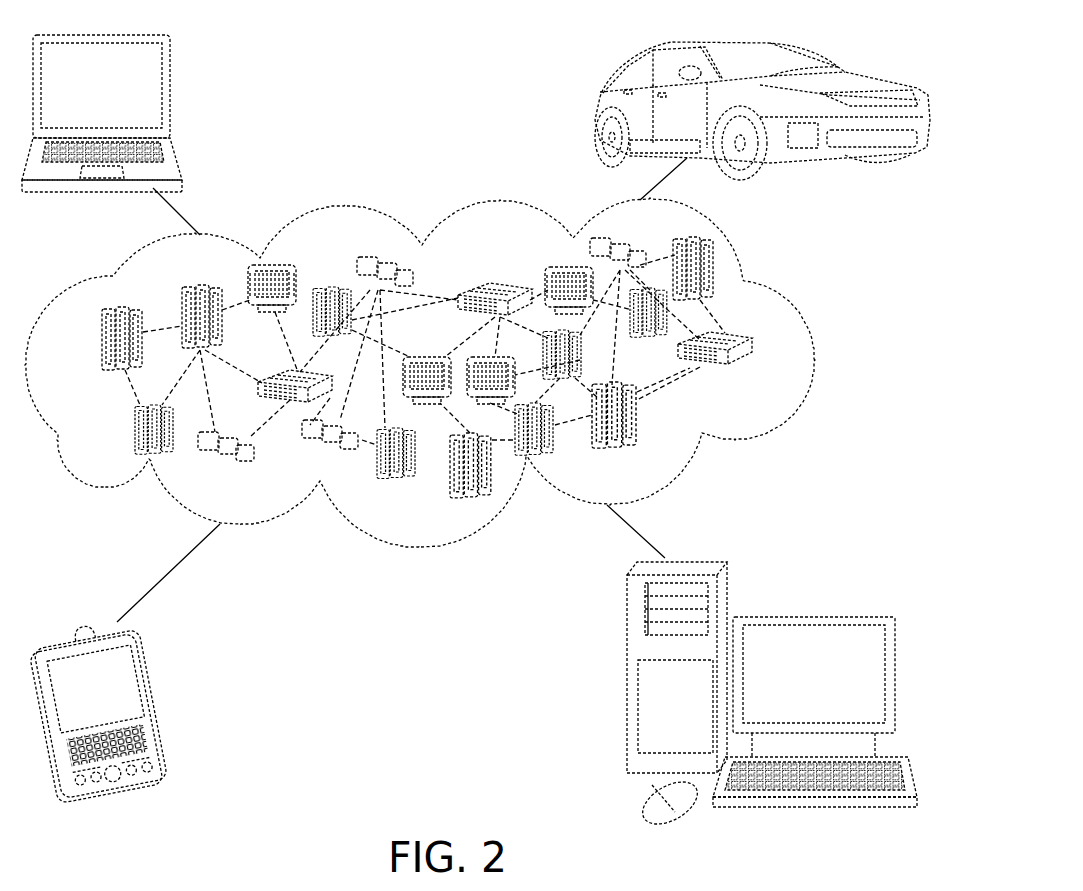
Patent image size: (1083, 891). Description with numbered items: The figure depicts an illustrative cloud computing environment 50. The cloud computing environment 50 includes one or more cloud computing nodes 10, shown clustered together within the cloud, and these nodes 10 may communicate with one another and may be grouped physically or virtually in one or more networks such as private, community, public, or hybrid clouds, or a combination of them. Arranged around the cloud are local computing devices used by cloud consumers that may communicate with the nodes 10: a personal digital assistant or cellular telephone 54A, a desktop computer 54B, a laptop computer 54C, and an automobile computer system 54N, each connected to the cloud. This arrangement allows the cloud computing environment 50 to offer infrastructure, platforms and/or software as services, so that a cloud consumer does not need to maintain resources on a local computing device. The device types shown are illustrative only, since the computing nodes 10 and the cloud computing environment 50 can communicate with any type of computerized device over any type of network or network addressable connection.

The cloud computing node 10 is at (755, 377).
The cloud computing environment 50 is at (808, 348).
The personal digital assistant (PDA) or cellular telephone 54A is at (158, 705).
The desktop computer 54B is at (810, 615).
The laptop computer 54C is at (170, 93).
The automobile computer system 54N is at (600, 117).